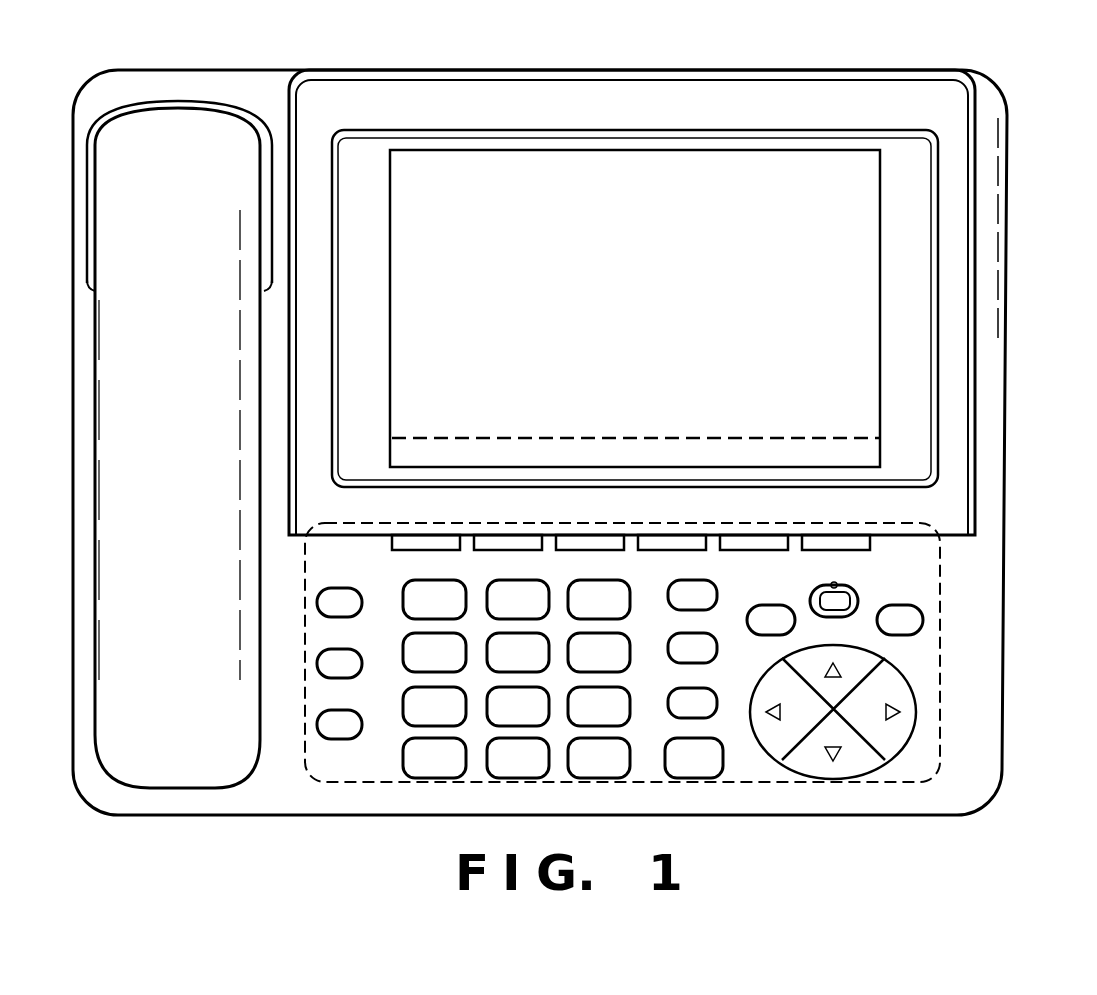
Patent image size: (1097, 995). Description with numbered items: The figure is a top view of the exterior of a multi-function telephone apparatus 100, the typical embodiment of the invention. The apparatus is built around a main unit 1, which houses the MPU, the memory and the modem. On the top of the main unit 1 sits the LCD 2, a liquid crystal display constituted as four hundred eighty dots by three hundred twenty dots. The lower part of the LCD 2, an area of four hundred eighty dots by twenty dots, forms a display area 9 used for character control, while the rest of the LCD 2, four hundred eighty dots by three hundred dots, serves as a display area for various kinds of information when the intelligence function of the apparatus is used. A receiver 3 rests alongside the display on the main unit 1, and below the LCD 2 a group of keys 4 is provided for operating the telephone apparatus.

The multi-function telephone apparatus 100 is at (578, 413).
The main unit 1 is at (1002, 595).
The LCD 2 is at (880, 358).
The receiver 3 is at (200, 101).
The group of keys 4 is at (940, 660).
The display area for character control 9 is at (868, 452).